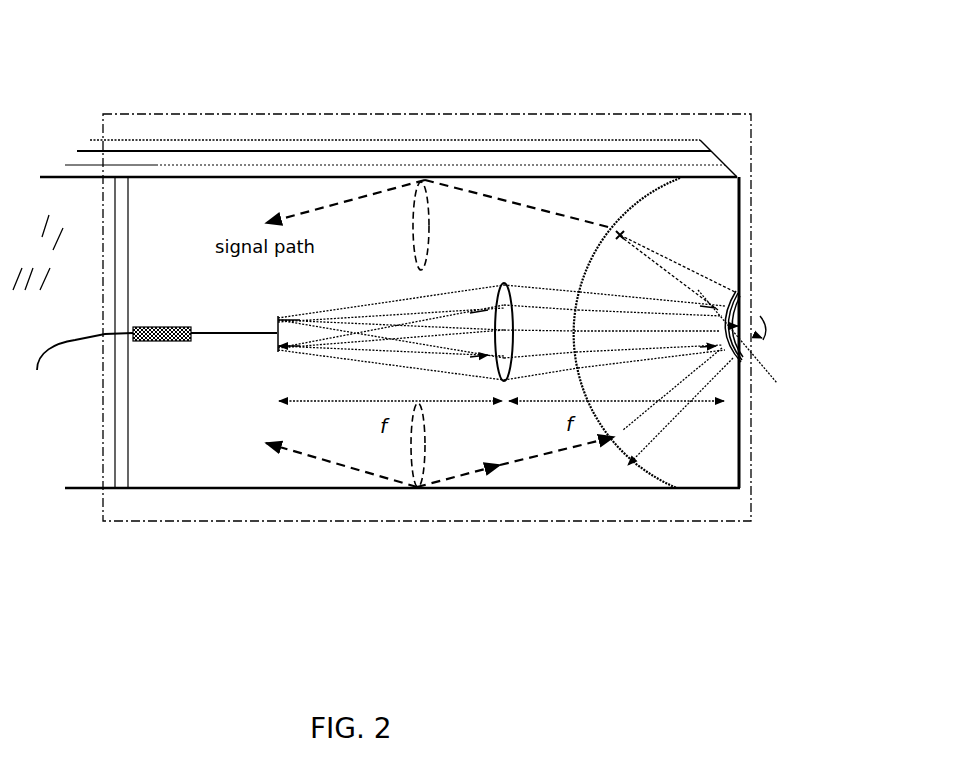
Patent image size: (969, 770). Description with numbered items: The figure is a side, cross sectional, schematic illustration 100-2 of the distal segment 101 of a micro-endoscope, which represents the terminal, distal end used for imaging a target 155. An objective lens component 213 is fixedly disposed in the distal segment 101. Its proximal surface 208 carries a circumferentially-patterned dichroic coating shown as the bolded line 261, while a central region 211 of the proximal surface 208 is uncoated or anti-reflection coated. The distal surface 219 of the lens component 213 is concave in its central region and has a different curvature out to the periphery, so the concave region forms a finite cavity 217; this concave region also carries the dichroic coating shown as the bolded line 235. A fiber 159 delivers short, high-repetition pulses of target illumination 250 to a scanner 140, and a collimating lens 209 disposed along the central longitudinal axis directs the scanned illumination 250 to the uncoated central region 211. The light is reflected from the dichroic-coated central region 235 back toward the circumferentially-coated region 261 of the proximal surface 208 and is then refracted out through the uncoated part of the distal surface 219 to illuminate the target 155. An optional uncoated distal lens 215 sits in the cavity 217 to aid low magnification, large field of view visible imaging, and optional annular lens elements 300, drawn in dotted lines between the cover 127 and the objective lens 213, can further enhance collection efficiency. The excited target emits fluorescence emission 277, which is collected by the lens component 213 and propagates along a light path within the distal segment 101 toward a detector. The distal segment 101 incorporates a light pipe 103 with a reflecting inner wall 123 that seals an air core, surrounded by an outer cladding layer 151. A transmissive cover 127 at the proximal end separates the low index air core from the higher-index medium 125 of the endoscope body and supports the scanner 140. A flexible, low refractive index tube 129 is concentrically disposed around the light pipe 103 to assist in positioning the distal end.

The illustration 100-2 is at (88, 49).
The distal segment 101 is at (626, 117).
The light pipe 103 is at (482, 175).
The reflecting inner wall 123 is at (418, 189).
The higher-index medium 125 is at (38, 252).
The transmissive cover 127 is at (114, 212).
The low refractive index tube 129 is at (396, 152).
The scanner 140 is at (163, 320).
The outer cladding layer 151 is at (294, 139).
The target 155 is at (781, 336).
The fiber 159 is at (147, 363).
The proximal surface 208 is at (618, 231).
The collimating lens 209 is at (499, 321).
The central region 211 is at (566, 347).
The objective lens component 213 is at (675, 261).
The distal lens 215 is at (735, 356).
The cavity 217 is at (768, 386).
The distal surface 219 is at (741, 288).
The dichroic-coated central region 235 is at (700, 365).
The target illumination 250 is at (429, 332).
The circumferentially-coated region 261 is at (627, 463).
The fluorescence emission 277 is at (280, 456).
The lens elements 300 is at (431, 235).